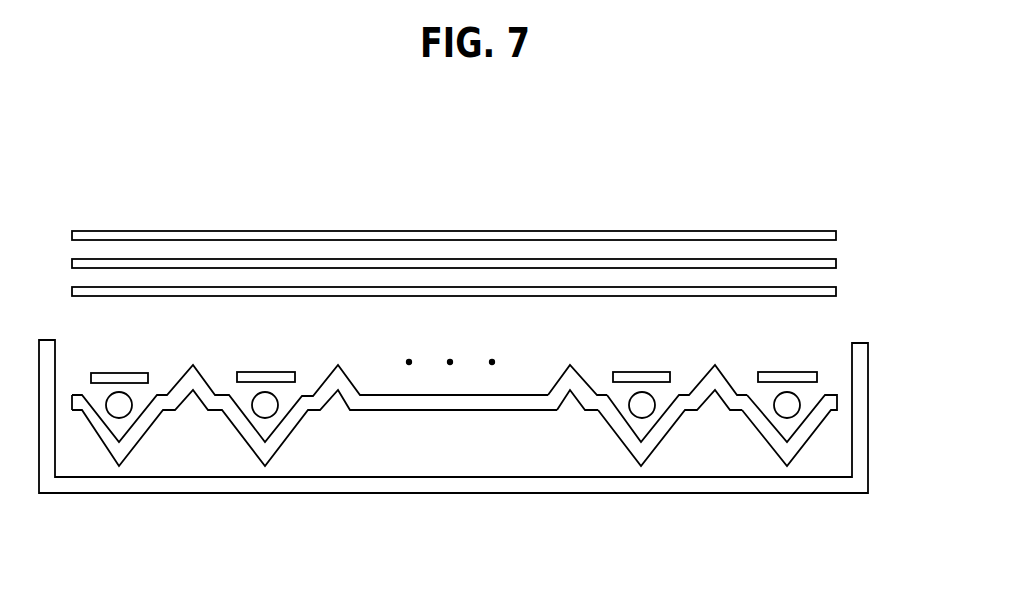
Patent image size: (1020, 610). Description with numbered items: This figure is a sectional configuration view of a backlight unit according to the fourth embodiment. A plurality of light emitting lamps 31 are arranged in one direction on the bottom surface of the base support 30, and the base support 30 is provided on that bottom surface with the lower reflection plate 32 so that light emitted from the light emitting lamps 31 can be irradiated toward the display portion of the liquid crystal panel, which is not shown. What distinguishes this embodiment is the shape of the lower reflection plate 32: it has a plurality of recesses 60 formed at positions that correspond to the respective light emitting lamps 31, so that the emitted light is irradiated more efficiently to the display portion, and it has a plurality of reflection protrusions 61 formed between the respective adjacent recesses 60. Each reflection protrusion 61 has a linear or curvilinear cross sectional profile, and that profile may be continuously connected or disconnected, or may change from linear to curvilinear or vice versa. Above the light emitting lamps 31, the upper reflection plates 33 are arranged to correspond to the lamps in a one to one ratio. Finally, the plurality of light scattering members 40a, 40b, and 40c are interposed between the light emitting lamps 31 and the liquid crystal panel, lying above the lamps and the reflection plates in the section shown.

The base support 30 is at (847, 485).
The light emitting lamps 31 is at (648, 402).
The lower reflection plate 32 is at (497, 370).
The upper reflection plates 33 is at (812, 377).
The light scattering member 40a is at (836, 293).
The light scattering member 40b is at (836, 266).
The light scattering member 40c is at (836, 238).
The recesses 60 is at (779, 426).
The reflection protrusions 61 is at (577, 365).